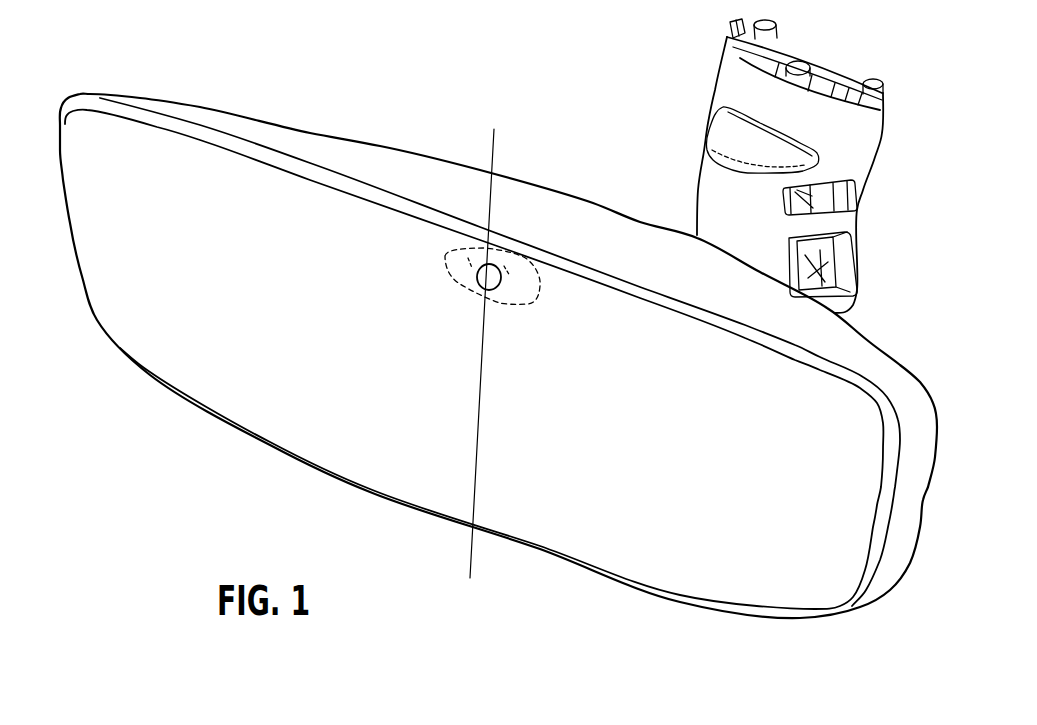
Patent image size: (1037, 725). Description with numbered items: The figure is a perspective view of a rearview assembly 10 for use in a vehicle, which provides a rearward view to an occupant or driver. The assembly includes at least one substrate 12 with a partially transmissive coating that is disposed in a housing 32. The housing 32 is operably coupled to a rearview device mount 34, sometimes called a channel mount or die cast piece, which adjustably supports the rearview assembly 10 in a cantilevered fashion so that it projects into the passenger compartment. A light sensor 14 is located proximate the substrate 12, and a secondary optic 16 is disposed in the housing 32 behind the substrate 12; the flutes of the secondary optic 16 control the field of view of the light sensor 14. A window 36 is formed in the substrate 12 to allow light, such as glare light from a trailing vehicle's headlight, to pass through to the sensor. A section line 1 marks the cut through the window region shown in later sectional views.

The section line 1- 1 is at (526, 116).
The rearview assembly 10 is at (944, 321).
The substrate 12 is at (803, 588).
The light sensor 14 is at (537, 292).
The secondary optic 16 is at (462, 250).
The housing 32 is at (261, 135).
The rearview device mount 34 is at (857, 158).
The window 36 is at (504, 286).